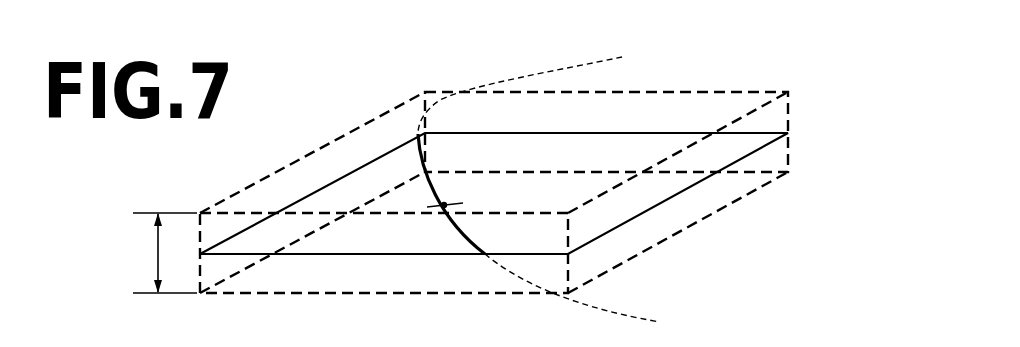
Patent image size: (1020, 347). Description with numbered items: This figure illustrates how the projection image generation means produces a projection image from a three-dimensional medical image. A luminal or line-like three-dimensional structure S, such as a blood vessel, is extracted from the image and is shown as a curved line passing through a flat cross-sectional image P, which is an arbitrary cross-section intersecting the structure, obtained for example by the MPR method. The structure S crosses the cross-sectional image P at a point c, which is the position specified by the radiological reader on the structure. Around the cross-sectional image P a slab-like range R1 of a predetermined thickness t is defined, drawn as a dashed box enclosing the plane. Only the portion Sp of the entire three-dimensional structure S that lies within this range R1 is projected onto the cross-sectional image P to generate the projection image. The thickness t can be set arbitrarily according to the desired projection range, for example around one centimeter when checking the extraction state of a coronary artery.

The range of predetermined thickness R1 is at (694, 92).
The cross-sectional image P is at (758, 133).
The three-dimensional structure S is at (510, 77).
The portion of the three-dimensional structure Sp is at (440, 202).
The point on the three-dimensional structure c is at (445, 190).
The thickness t is at (165, 253).